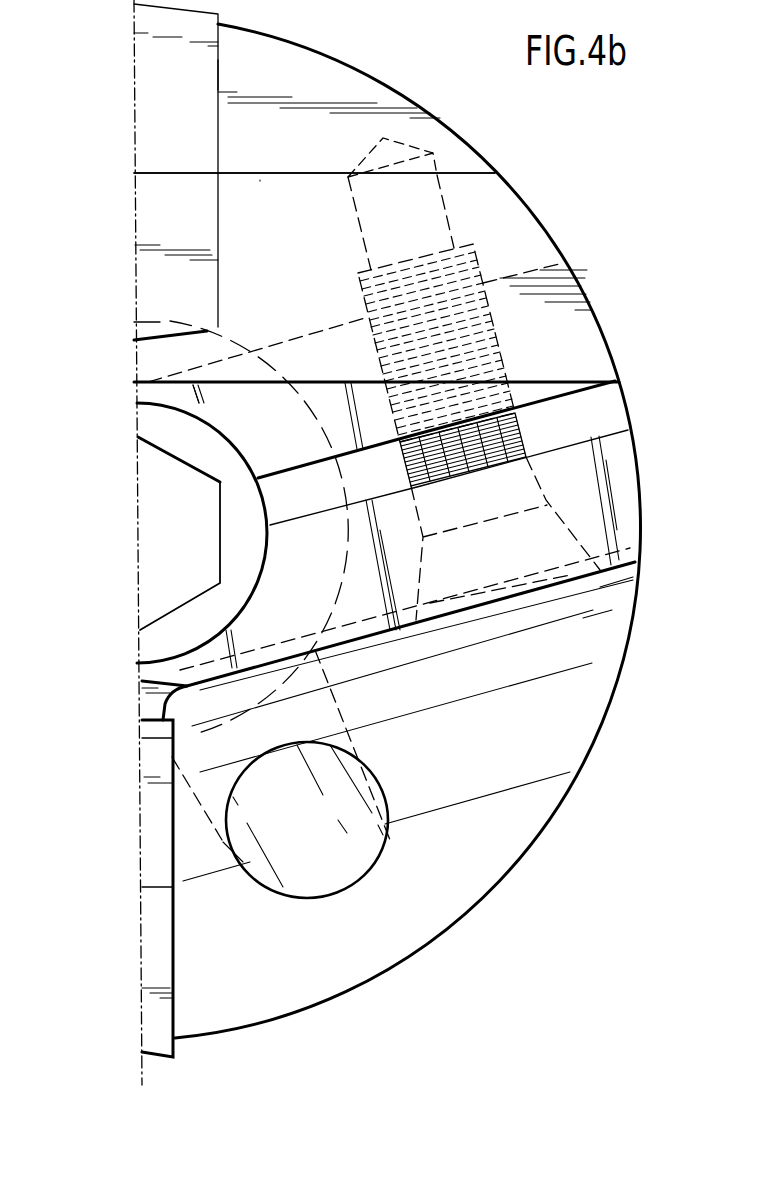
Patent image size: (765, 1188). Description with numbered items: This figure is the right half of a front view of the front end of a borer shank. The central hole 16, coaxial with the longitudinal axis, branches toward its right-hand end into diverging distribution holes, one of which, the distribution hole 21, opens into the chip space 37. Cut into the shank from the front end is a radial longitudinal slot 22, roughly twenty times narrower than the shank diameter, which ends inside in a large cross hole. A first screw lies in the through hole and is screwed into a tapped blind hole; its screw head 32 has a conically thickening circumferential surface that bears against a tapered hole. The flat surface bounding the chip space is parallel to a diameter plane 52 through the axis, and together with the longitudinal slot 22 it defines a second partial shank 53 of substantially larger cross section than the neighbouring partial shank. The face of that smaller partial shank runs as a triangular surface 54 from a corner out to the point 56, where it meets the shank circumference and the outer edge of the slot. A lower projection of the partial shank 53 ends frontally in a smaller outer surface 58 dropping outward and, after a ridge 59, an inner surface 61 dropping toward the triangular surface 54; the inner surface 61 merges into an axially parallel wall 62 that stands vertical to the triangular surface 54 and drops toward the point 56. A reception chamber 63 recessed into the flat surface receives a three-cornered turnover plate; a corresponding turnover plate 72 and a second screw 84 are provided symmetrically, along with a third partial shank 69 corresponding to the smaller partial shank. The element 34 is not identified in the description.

The central hole 16 is at (237, 342).
The distribution hole 21 is at (347, 710).
The radial longitudinal slot 22 is at (616, 428).
The screw head 32 is at (227, 601).
The inner profile 34 is at (203, 484).
The chip space 37 is at (490, 759).
The diameter plane 52 is at (133, 77).
The second partial shank 53 is at (296, 224).
The triangular surface 54 is at (304, 439).
The point 56 is at (616, 380).
The outer surface 58 is at (342, 89).
The ridge 59 is at (280, 173).
The inner surface 61 is at (332, 309).
The axially parallel wall 62 is at (332, 386).
The reception chamber 63 is at (222, 74).
The third partial shank 69 is at (415, 562).
The turnover plate 72 is at (165, 929).
The second screw 84 is at (527, 428).